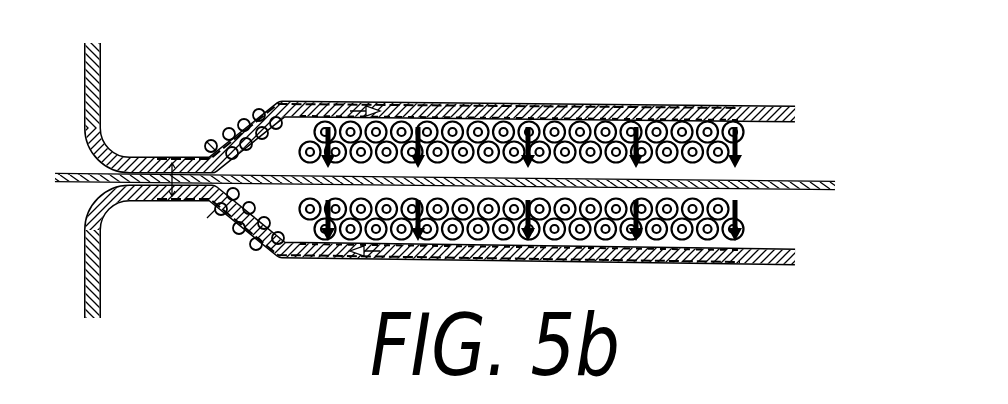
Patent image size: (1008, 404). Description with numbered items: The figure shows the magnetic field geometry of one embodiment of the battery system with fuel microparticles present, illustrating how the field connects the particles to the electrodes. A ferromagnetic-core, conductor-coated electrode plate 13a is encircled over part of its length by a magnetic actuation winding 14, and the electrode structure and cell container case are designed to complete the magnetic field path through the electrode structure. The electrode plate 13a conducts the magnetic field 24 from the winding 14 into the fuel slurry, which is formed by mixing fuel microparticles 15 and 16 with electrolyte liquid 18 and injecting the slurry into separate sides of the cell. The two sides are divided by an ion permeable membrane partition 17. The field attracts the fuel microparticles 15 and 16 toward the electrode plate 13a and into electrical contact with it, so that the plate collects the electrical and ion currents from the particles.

The electrode plate 13a is at (785, 110).
The magnetic actuation winding 14 is at (270, 103).
The fuel microparticles 15 is at (557, 130).
The fuel microparticles 16 is at (667, 245).
The ion permeable membrane partition 17 is at (834, 182).
The electrolyte liquid 18 is at (766, 150).
The magnetic field 24 is at (697, 118).